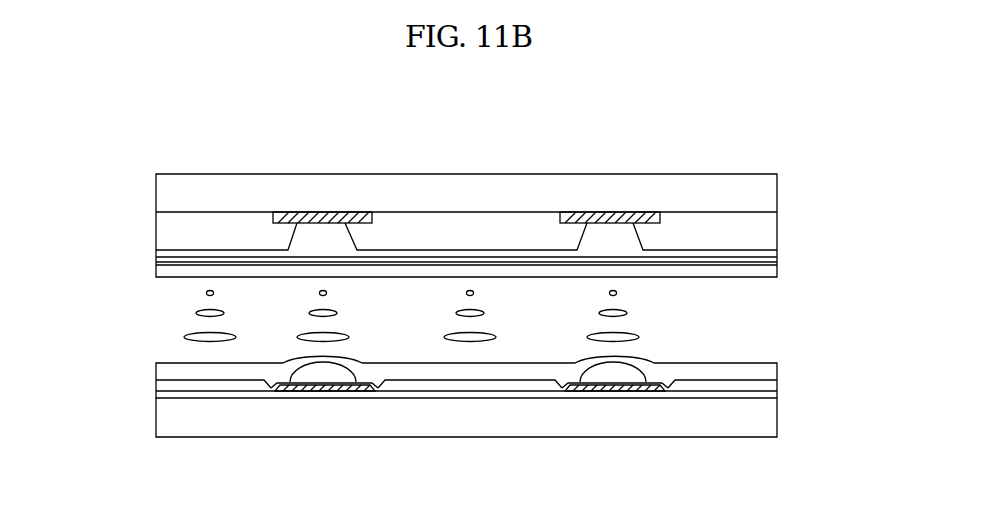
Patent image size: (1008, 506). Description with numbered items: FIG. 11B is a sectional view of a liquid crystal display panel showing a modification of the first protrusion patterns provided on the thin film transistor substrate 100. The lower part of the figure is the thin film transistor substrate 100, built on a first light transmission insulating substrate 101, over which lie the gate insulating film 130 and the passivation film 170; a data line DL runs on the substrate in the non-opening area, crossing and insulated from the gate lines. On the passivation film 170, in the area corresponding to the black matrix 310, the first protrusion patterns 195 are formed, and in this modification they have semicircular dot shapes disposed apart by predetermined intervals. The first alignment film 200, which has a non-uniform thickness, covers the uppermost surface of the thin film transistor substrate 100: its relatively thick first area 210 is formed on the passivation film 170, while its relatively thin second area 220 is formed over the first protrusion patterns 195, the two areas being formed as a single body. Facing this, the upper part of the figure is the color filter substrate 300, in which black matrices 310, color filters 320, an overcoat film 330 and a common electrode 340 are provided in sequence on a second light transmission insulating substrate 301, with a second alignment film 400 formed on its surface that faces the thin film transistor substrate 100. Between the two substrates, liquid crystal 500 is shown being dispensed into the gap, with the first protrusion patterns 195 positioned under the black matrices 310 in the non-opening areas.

The color filter substrate 300 is at (136, 181).
The second light transmission insulating substrate 301 is at (777, 188).
The black matrix 310 is at (605, 212).
The color filter 320 is at (777, 212).
The overcoat film 330 is at (777, 251).
The common electrode 340 is at (777, 262).
The second alignment film 400 is at (156, 274).
The liquid crystal droplets 500 is at (655, 315).
The first alignment film 200 is at (846, 333).
The first area 210 is at (777, 364).
The second area 220 is at (628, 356).
The thin film transistor substrate 100 is at (134, 455).
The first light transmission insulating substrate 101 is at (156, 427).
The gate insulating film 130 is at (156, 391).
The passivation film 170 is at (156, 381).
The first protrusion pattern 195 is at (340, 383).
The data line DL is at (307, 391).